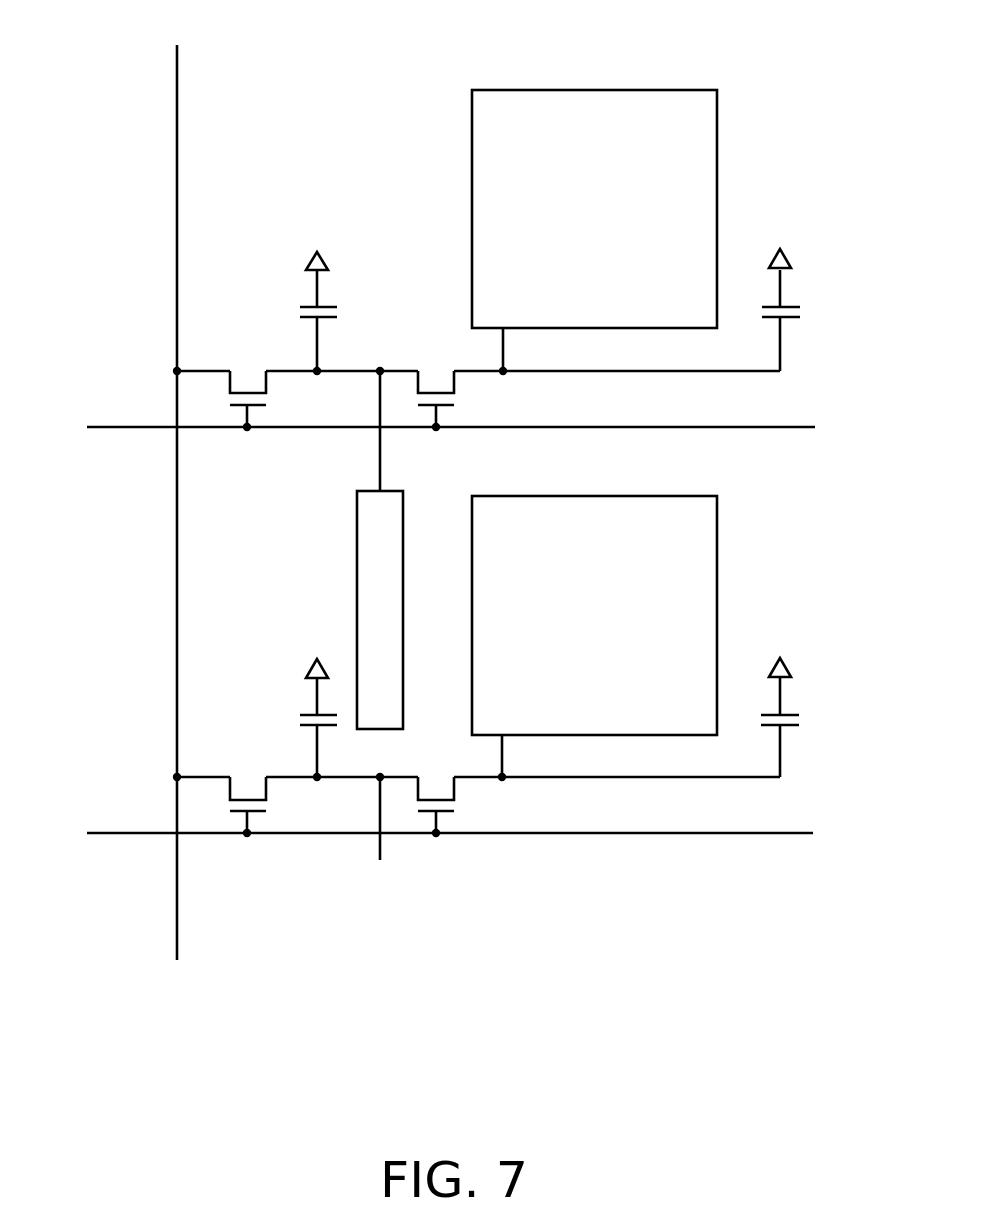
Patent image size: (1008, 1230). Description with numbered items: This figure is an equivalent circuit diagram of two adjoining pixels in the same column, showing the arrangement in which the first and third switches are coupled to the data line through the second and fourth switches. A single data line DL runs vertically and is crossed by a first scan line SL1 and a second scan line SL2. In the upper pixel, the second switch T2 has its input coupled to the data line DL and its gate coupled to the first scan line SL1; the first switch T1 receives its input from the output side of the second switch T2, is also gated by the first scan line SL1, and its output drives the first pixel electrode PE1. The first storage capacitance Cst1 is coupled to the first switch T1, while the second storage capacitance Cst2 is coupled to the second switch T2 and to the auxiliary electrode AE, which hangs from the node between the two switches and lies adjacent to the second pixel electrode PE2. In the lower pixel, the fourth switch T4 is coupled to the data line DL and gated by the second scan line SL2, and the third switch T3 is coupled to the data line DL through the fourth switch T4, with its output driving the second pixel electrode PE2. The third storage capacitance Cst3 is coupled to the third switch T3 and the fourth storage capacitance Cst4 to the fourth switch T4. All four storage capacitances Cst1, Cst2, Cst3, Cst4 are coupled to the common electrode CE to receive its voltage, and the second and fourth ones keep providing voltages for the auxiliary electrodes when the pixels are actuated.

The data line DL is at (186, 483).
The first scan line SL1 is at (422, 428).
The second scan line SL2 is at (421, 834).
The first switch T1 is at (435, 384).
The second switch T2 is at (246, 384).
The third switch T3 is at (435, 790).
The fourth switch T4 is at (246, 790).
The first storage capacitance Cst1 is at (815, 320).
The second storage capacitance Cst2 is at (285, 320).
The third storage capacitance Cst3 is at (814, 727).
The fourth storage capacitance Cst4 is at (285, 727).
The first pixel electrode PE1 is at (622, 225).
The second pixel electrode PE2 is at (620, 631).
The auxiliary electrode AE is at (402, 635).
The common electrode CE is at (549, 444).